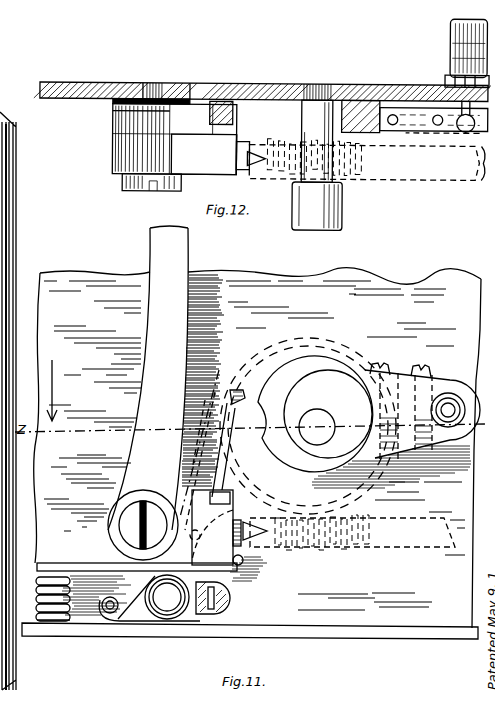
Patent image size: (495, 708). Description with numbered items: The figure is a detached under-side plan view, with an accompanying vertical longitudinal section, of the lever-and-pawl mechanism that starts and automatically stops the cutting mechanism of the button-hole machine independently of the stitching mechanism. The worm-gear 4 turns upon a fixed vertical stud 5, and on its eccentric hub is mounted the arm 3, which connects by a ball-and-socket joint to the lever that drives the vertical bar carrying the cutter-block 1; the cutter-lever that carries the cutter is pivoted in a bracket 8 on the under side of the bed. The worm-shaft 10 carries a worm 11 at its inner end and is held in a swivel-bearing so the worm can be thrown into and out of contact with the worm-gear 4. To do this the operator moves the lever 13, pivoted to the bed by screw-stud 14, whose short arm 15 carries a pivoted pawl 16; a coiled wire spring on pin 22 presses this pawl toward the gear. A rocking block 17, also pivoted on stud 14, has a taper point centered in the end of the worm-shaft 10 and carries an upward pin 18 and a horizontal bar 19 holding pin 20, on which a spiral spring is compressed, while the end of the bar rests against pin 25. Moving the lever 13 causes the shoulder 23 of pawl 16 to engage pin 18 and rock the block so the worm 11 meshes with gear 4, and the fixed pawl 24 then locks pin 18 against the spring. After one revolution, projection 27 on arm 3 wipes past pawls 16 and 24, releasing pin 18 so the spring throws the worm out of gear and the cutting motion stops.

In FIG. 12, the cutter-block 1 is at (317, 157).
In FIG. 12, the arm 3 is at (420, 96).
In FIG. 11, the arm 3 is at (447, 428).
In FIG. 12, the worm-gear 4 is at (406, 130).
In FIG. 11, the worm-gear 4 is at (283, 489).
In FIG. 11, the fixed vertical stud 5 is at (317, 427).
In FIG. 12, the bracket 8 is at (222, 130).
In FIG. 12, the worm-shaft 10 is at (355, 178).
In FIG. 11, the worm-shaft 10 is at (344, 548).
In FIG. 12, the worm 11 is at (367, 163).
In FIG. 11, the worm 11 is at (352, 532).
In FIG. 12, the lever 13 is at (185, 94).
In FIG. 11, the lever 13 is at (149, 332).
In FIG. 12, the screw-stud 14 is at (140, 176).
In FIG. 11, the screw-stud 14 is at (143, 525).
In FIG. 12, the short arm 15 is at (113, 118).
In FIG. 11, the short arm 15 is at (149, 618).
In FIG. 12, the pawl 16 is at (214, 116).
In FIG. 11, the pawl 16 is at (240, 393).
In FIG. 11, the rocking block 17 is at (217, 527).
In FIG. 11, the pin 18 is at (224, 497).
In FIG. 11, the horizontal bar 19 is at (86, 563).
In FIG. 11, the pin 20 is at (40, 600).
In FIG. 11, the pin 22 is at (110, 614).
In FIG. 12, the shoulder 23 is at (250, 156).
In FIG. 11, the shoulder 23 is at (240, 522).
In FIG. 12, the pawl 24 is at (222, 92).
In FIG. 11, the pawl 24 is at (248, 397).
In FIG. 11, the pin 25 is at (298, 587).
In FIG. 12, the projection 27 is at (264, 92).
In FIG. 11, the projection 27 is at (42, 650).